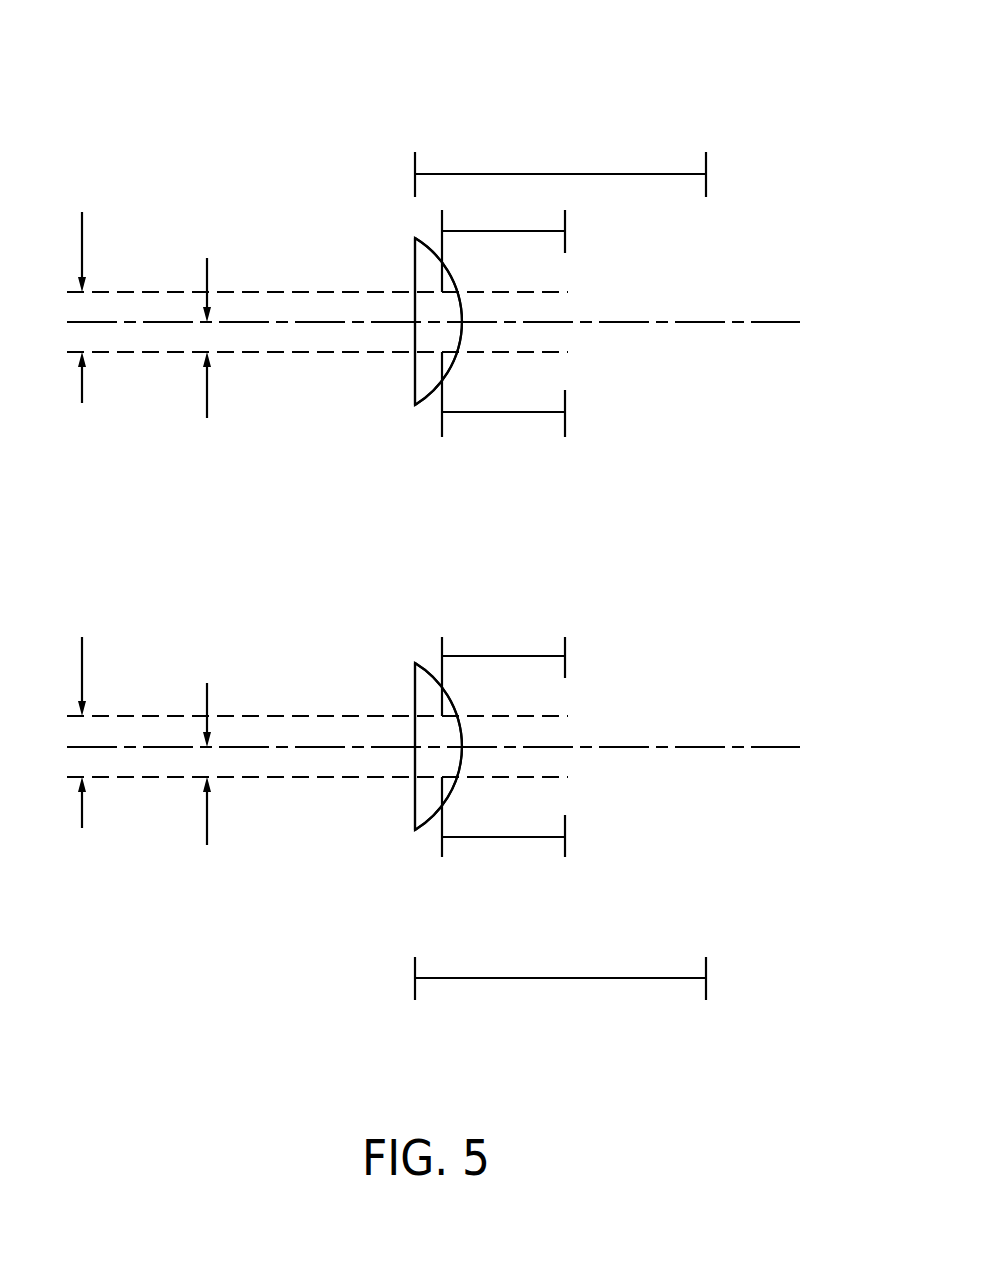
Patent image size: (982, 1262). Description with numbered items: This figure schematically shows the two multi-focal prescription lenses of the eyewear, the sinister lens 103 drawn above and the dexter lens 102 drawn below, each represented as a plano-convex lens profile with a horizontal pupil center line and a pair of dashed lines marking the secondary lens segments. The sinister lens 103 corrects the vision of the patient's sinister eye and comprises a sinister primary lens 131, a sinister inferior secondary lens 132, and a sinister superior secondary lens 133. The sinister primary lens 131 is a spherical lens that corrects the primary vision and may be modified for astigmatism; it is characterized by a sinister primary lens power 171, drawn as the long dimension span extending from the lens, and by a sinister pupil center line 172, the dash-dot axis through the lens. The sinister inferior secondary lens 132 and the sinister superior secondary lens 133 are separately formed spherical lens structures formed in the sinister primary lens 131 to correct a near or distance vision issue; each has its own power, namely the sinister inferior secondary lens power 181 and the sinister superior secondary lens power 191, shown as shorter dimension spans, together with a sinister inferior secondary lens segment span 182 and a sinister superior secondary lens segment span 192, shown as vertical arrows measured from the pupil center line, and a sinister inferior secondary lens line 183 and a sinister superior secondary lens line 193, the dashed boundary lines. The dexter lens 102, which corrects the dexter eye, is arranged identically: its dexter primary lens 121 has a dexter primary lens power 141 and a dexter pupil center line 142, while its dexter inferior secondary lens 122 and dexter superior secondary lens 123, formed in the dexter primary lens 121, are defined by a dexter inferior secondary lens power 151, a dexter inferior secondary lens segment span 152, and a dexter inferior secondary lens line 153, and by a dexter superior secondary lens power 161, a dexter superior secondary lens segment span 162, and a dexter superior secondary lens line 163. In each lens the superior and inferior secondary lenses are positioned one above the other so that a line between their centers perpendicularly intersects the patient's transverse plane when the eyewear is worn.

The dexter lens 102 is at (192, 1002).
The sinister lens 103 is at (196, 108).
The dexter primary lens 121 is at (415, 689).
The dexter inferior secondary lens 122 is at (422, 802).
The dexter superior secondary lens 123 is at (422, 699).
The sinister primary lens 131 is at (415, 264).
The sinister inferior secondary lens 132 is at (422, 377).
The sinister superior secondary lens 133 is at (422, 274).
The dexter primary lens power 141 is at (557, 1037).
The dexter pupil center line 142 is at (758, 746).
The dexter inferior secondary lens power 151 is at (507, 883).
The dexter inferior secondary lens segment span 152 is at (209, 788).
The dexter inferior secondary lens line 153 is at (278, 778).
The dexter superior secondary lens power 161 is at (540, 627).
The dexter superior secondary lens segment span 162 is at (82, 706).
The dexter superior secondary lens line 163 is at (146, 715).
The sinister primary lens power 171 is at (552, 145).
The sinister pupil center line 172 is at (758, 321).
The sinister inferior secondary lens power 181 is at (507, 458).
The sinister inferior secondary lens segment span 182 is at (209, 363).
The sinister inferior secondary lens line 183 is at (278, 353).
The sinister superior secondary lens power 191 is at (540, 200).
The sinister superior secondary lens segment span 192 is at (82, 281).
The sinister superior secondary lens line 193 is at (146, 290).